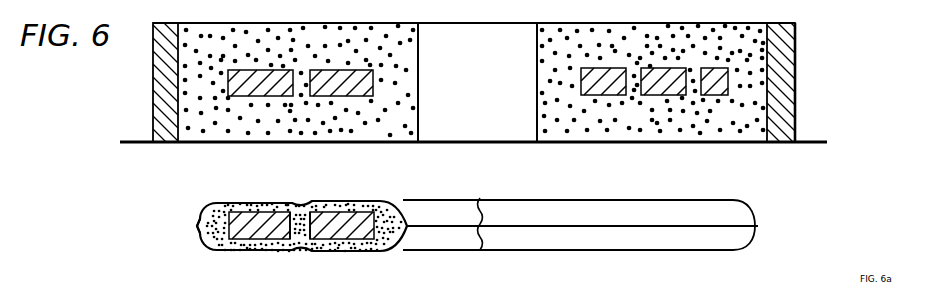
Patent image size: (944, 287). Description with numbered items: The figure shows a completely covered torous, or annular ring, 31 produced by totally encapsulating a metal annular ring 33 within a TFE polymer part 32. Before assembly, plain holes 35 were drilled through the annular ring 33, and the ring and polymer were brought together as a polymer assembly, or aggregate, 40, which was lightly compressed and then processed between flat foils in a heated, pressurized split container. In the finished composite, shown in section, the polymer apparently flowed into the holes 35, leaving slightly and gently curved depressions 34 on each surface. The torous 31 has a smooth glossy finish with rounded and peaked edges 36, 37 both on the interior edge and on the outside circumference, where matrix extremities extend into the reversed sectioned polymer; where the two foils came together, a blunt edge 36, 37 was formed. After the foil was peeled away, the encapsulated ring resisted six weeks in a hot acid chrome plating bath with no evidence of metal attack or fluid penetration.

In FIG. 6a, the covered torous 31 is at (615, 191).
In FIG. 6a, the polymer part 32 is at (478, 200).
In FIG. 6a, the annular ring 33 is at (327, 228).
In FIG. 6a, the curved depressions 34 is at (300, 211).
In FIG. 6a, the plain holes 35 is at (299, 229).
In FIG. 6a, the rounded and peaked edge 36 is at (205, 218).
In FIG. 6a, the rounded and peaked edge 37 is at (207, 240).
In FIG. 6, the polymer assembly 40 is at (465, 22).